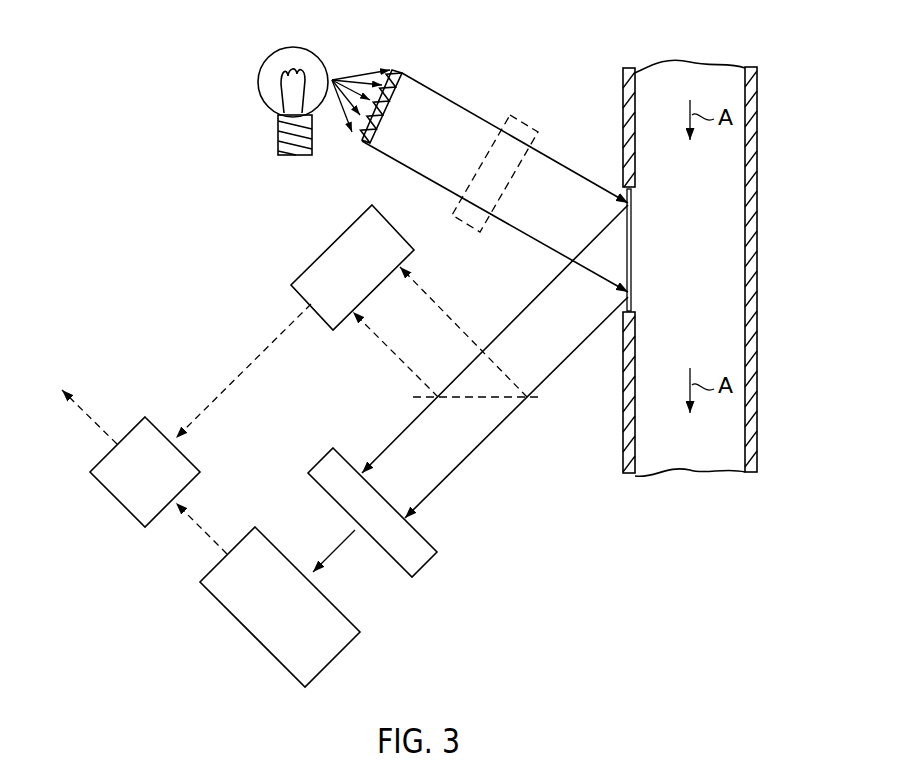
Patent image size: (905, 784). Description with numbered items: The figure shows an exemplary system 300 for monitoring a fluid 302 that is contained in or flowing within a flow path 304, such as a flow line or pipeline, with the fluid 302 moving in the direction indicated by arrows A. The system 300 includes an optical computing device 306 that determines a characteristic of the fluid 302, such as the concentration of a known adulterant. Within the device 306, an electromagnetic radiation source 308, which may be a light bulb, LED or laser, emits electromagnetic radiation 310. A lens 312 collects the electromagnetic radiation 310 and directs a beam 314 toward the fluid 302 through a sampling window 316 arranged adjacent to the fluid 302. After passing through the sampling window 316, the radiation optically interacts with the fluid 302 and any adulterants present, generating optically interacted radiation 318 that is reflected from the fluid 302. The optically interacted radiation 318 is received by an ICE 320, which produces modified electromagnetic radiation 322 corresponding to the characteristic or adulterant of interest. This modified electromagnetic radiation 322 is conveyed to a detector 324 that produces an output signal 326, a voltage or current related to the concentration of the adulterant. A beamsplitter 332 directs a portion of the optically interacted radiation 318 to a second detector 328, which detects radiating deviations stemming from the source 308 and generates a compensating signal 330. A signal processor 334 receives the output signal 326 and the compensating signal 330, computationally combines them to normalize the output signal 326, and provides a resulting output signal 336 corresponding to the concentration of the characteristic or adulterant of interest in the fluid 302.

The system 300 is at (561, 57).
The fluid 302 is at (713, 267).
The flow path 304 is at (758, 120).
The optical computing device 306 is at (190, 228).
The electromagnetic radiation source 308 is at (260, 70).
The electromagnetic radiation 310 is at (358, 72).
The lens 312 is at (400, 72).
The beam 314 is at (462, 111).
The sampling window 316 is at (633, 200).
The optically interacted radiation 318 is at (440, 485).
The ICE 320 is at (466, 225).
The modified electromagnetic radiation 322 is at (348, 553).
The detector 324 is at (330, 652).
The output signal 326 is at (205, 532).
The second detector 328 is at (346, 236).
The compensating signal 330 is at (245, 368).
The beamsplitter 332 is at (455, 398).
The signal processor 334 is at (108, 488).
The resulting output signal 336 is at (90, 418).